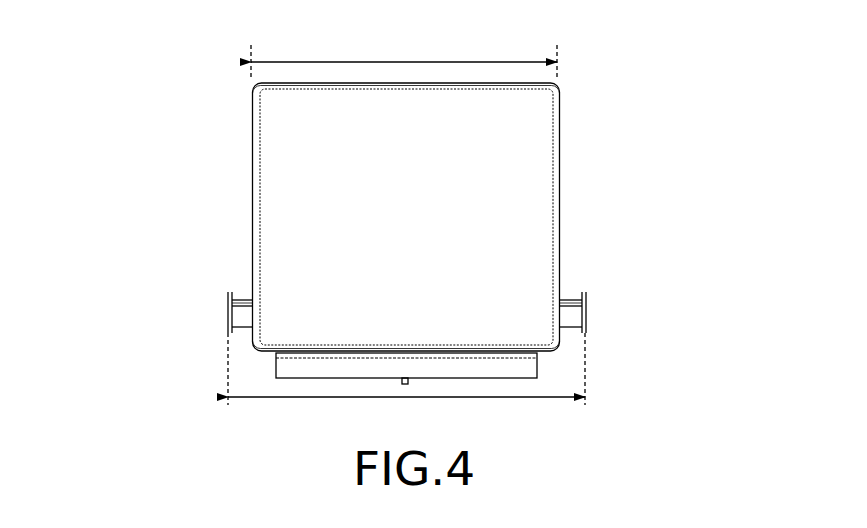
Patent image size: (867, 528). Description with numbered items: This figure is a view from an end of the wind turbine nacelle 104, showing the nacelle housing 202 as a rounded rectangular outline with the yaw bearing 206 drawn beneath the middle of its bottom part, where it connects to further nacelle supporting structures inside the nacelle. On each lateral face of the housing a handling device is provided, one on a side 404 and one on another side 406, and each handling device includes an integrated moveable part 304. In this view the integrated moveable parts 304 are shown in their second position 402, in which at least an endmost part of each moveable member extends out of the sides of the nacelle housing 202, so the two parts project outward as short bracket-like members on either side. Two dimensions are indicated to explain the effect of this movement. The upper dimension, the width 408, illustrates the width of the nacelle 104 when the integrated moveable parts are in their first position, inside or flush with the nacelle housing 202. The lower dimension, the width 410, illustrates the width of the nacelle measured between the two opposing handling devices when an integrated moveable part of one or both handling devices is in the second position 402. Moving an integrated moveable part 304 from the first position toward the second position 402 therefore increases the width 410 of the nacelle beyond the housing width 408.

The wind turbine nacelle 104 is at (145, 78).
The nacelle housing 202 is at (560, 142).
The yaw bearing 206 is at (537, 369).
The integrated moveable part 304 is at (228, 300).
The second position 402 is at (592, 327).
The side 404 is at (180, 195).
The another side 406 is at (688, 217).
The width of the nacelle 408 is at (382, 62).
The width of the nacelle measured between two opposing handling devices 410 is at (338, 397).